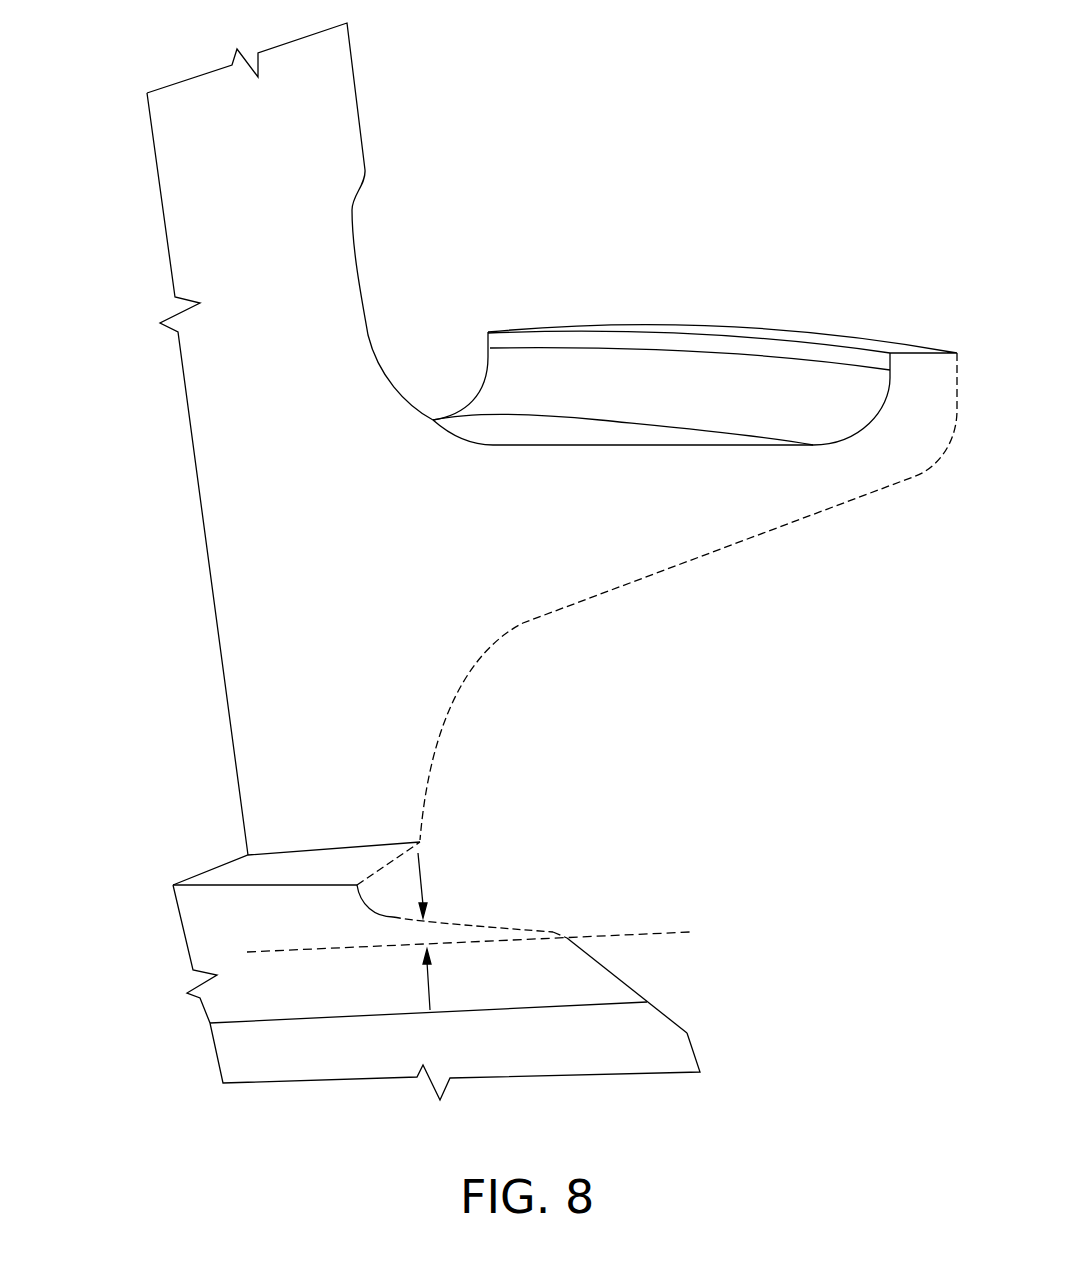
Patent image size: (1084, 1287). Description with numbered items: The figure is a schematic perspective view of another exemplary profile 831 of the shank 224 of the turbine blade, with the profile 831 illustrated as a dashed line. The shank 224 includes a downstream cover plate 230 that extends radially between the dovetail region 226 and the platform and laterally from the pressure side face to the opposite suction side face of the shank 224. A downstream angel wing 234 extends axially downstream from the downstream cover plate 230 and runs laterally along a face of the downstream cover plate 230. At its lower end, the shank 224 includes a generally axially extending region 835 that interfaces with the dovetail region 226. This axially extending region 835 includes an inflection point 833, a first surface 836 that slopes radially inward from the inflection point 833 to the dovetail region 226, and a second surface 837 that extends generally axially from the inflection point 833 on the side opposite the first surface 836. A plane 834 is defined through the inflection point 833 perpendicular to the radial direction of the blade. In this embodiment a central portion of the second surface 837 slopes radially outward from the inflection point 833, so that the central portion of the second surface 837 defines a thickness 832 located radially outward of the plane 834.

The shank 224 is at (128, 230).
The downstream cover plate 230 is at (340, 152).
The downstream angel wing 234 is at (752, 475).
The dovetail region 226 is at (637, 1050).
The profile 831 is at (713, 553).
The thickness 832 is at (427, 920).
The inflection point 833 is at (560, 917).
The plane 834 is at (633, 931).
The axially extending region 835 is at (517, 991).
The first surface 836 is at (622, 975).
The second surface 837 is at (472, 920).